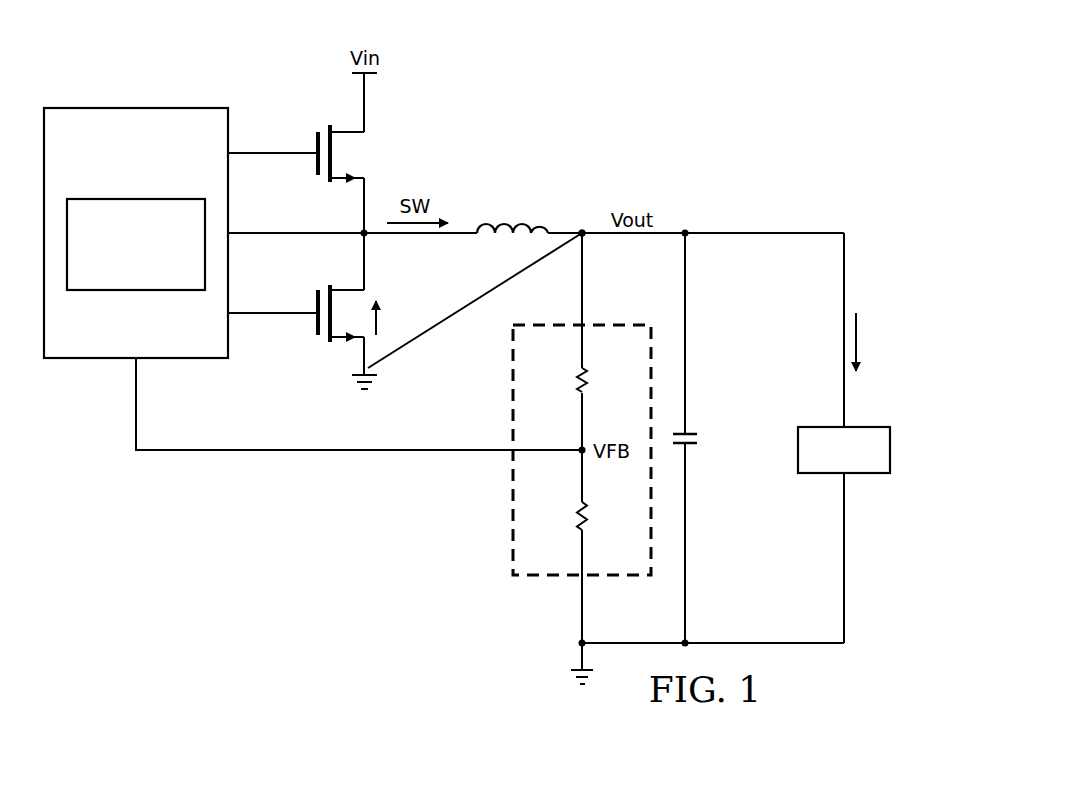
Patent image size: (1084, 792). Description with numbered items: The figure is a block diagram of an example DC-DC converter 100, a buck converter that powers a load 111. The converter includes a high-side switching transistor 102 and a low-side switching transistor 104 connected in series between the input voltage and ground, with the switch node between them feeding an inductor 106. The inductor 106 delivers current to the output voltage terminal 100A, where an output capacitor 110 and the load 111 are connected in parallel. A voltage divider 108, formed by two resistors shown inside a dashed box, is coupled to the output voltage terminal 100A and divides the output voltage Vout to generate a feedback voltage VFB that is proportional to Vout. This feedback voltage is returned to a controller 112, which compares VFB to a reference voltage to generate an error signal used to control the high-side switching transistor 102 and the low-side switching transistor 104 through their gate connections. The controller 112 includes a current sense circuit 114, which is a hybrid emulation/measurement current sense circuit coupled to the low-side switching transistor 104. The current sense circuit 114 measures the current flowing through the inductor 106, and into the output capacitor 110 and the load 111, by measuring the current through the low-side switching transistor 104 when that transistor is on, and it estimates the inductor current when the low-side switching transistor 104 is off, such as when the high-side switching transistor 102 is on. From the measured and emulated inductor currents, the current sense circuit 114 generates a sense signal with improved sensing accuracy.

The DC-DC converter 100 is at (694, 94).
The output voltage terminal 100A is at (586, 238).
The high-side switching transistor 102 is at (318, 140).
The low-side switching transistor 104 is at (318, 325).
The inductor 106 is at (520, 214).
The voltage divider 108 is at (504, 494).
The output capacitor 110 is at (697, 442).
The load 111 is at (890, 451).
The controller 112 is at (124, 108).
The current sense circuit 114 is at (137, 290).